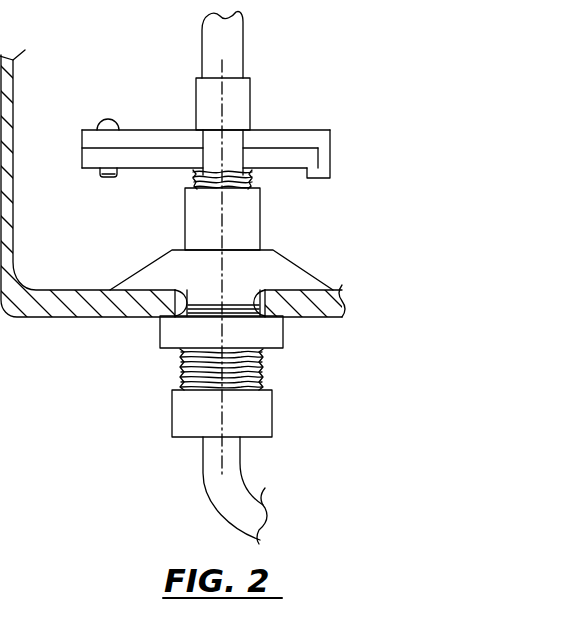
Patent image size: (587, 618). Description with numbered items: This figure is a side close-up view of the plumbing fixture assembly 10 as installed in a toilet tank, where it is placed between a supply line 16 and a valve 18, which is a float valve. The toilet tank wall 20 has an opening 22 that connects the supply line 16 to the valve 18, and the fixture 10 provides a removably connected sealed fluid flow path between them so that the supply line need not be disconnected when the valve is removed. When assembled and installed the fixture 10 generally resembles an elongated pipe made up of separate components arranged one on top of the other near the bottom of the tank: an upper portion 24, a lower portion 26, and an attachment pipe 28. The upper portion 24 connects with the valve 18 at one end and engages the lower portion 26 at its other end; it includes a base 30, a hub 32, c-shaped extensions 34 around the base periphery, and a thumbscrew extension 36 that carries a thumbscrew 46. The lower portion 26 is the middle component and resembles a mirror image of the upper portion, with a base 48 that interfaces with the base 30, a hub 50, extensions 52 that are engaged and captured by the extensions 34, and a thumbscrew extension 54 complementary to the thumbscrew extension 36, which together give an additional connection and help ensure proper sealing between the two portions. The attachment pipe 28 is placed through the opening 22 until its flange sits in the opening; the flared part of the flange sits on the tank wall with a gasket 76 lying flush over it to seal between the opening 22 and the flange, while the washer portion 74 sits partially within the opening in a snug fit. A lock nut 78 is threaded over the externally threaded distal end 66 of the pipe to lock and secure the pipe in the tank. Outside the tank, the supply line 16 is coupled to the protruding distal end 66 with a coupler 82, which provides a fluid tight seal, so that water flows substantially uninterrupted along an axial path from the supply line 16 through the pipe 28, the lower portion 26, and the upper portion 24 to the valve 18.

The plumbing fixture assembly 10 is at (296, 89).
The supply line 16 is at (220, 503).
The valve 18 is at (207, 43).
The toilet tank wall 20 is at (48, 318).
The opening 22 is at (177, 322).
The upper portion 24 is at (256, 92).
The lower portion 26 is at (92, 200).
The attachment pipe 28 is at (272, 368).
The base 30 is at (272, 138).
The hub 32 is at (199, 108).
The extensions 34 is at (217, 157).
The thumbscrew extension 36 is at (92, 142).
The thumbscrew 46 is at (107, 127).
The base 48 is at (277, 163).
The hub 50 is at (193, 183).
The extensions 52 is at (312, 163).
The thumbscrew extension 54 is at (90, 170).
The distal end 66 is at (183, 367).
The washer portion 74 is at (182, 302).
The gasket 76 is at (283, 262).
The lock nut 78 is at (267, 333).
The coupler 82 is at (262, 415).